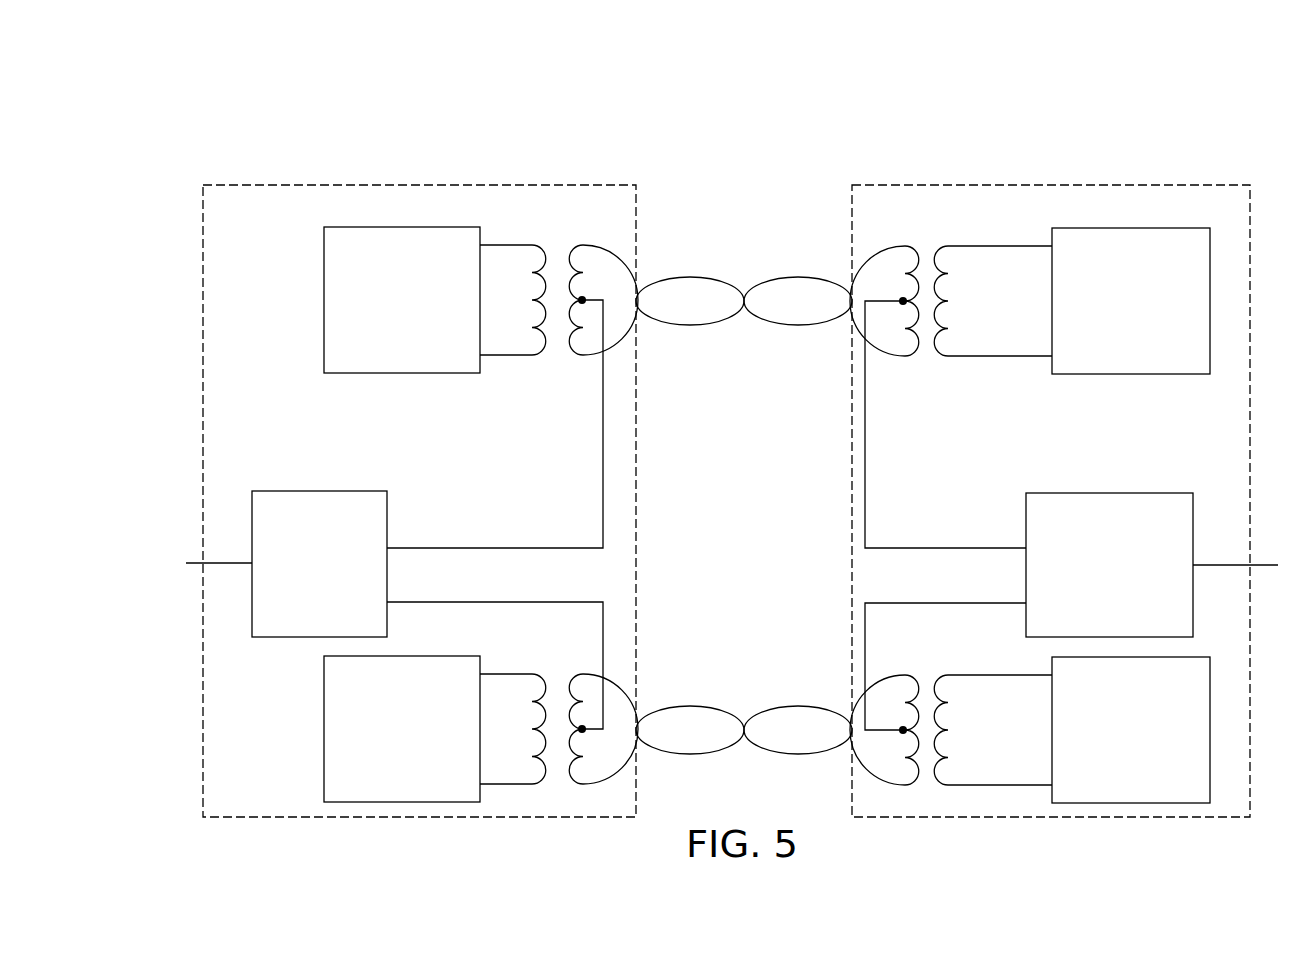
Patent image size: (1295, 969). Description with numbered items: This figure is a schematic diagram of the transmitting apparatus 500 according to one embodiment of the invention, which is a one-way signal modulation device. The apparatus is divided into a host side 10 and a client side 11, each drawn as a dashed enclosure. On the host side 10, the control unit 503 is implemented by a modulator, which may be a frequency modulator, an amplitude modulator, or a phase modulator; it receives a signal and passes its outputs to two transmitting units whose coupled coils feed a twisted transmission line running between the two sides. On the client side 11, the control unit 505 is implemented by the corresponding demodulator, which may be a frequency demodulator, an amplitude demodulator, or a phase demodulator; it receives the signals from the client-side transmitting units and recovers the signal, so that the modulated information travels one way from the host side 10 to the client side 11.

The transmitting apparatus 500 is at (208, 118).
The host side 10 is at (418, 184).
The client side 11 is at (1050, 185).
The control unit 503 is at (312, 491).
The control unit 505 is at (1108, 493).